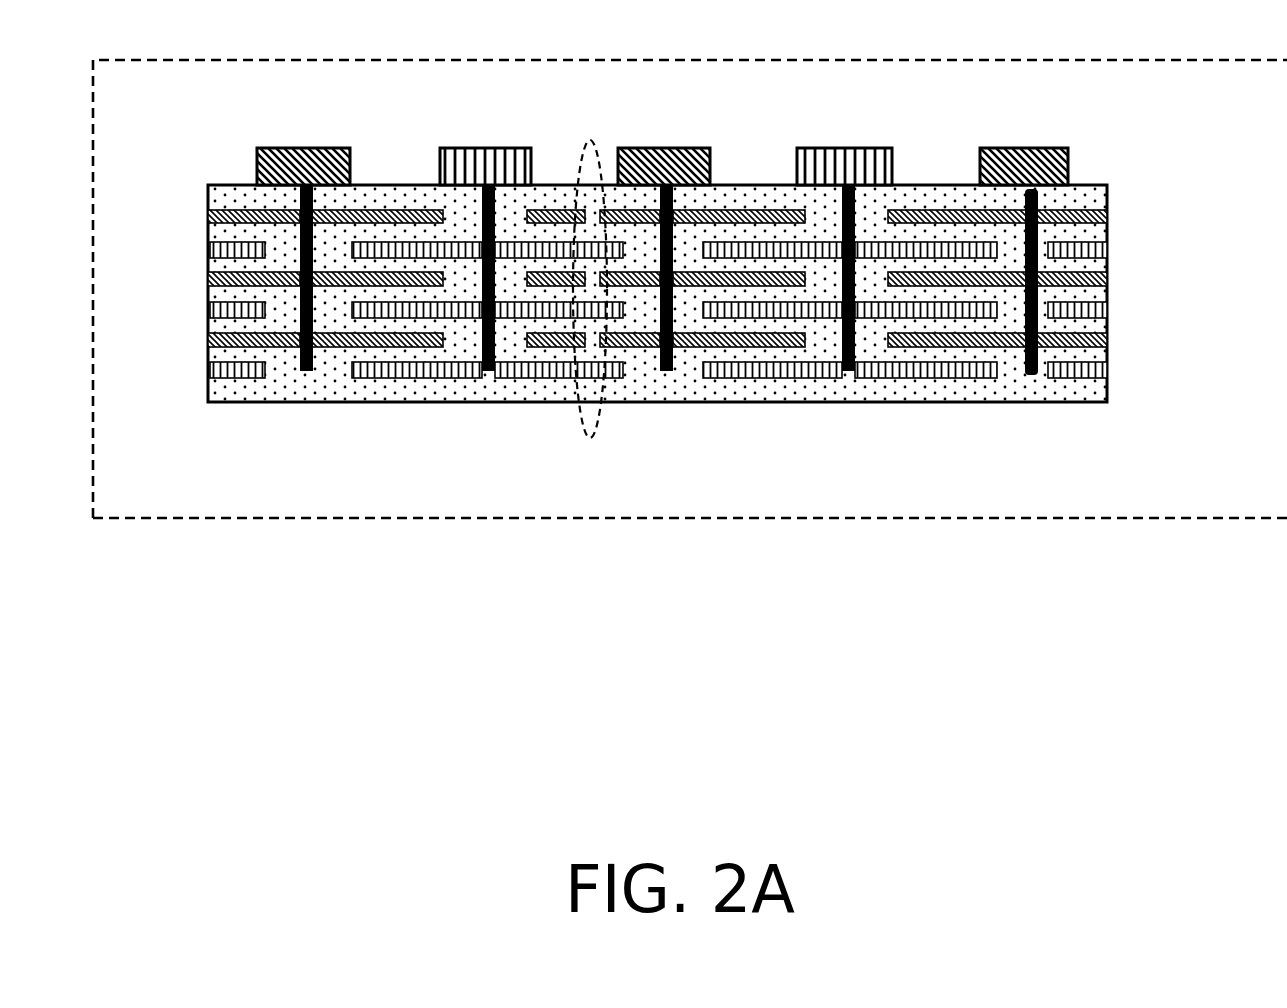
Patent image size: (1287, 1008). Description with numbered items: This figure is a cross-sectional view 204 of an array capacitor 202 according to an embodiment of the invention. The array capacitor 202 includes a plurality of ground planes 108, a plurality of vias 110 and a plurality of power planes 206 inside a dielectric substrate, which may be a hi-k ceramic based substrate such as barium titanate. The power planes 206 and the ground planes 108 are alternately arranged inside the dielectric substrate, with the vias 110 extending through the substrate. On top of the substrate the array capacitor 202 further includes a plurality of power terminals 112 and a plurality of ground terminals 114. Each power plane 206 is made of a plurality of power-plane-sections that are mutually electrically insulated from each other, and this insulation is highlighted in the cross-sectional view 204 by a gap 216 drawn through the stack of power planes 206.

The array capacitor 202 is at (731, 301).
The cross-sectional view 204 is at (698, 60).
The power plane 206 is at (1009, 347).
The ground plane 108 is at (505, 378).
The via 110 is at (308, 371).
The power terminal 112 is at (1023, 148).
The ground terminal 114 is at (485, 148).
The gap 216 is at (600, 415).